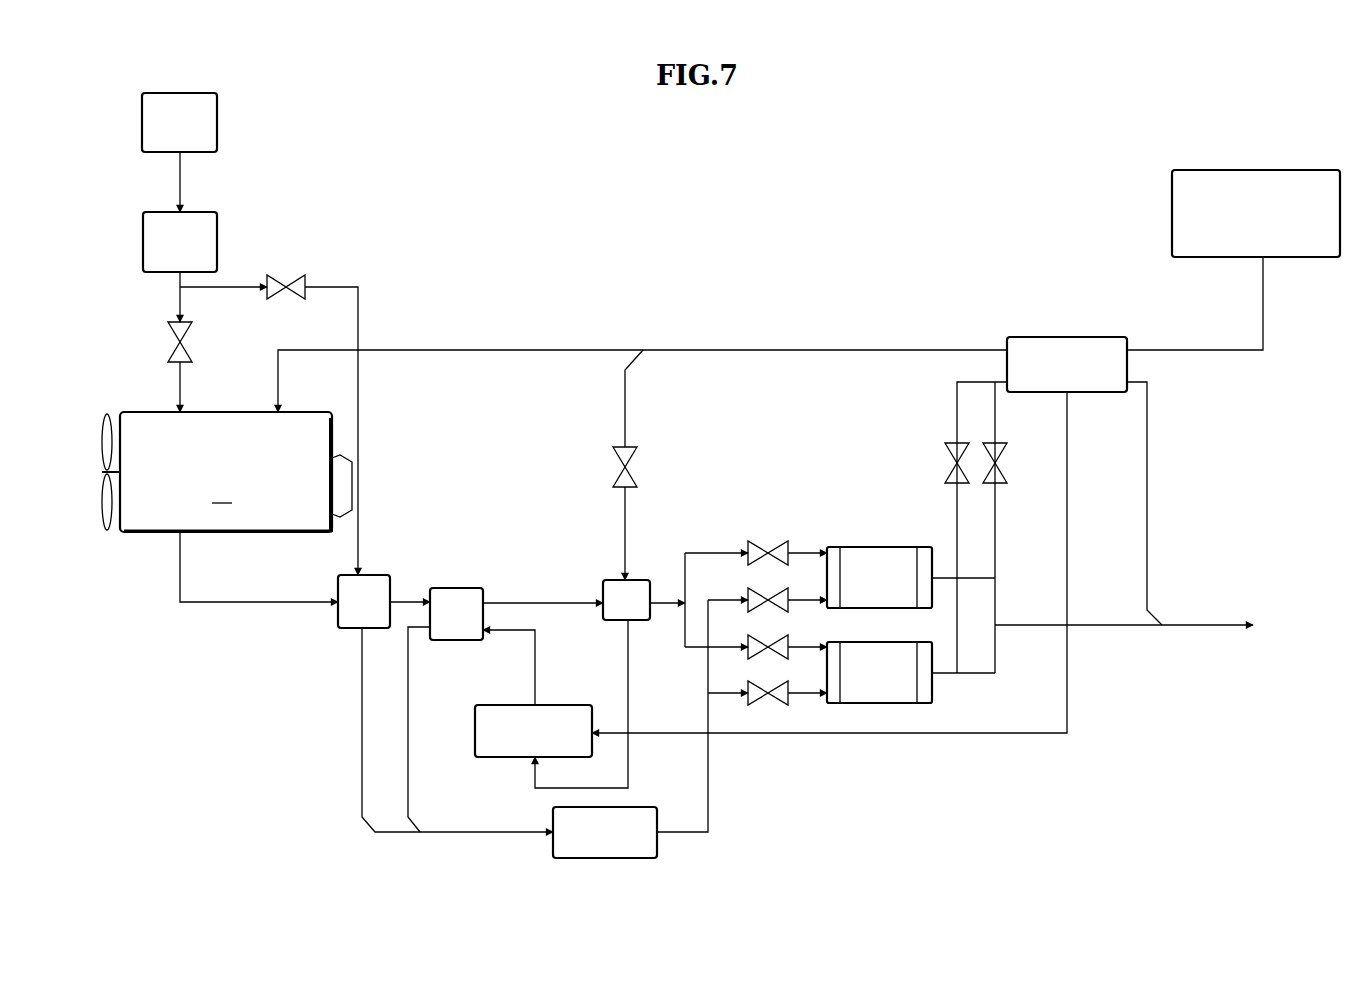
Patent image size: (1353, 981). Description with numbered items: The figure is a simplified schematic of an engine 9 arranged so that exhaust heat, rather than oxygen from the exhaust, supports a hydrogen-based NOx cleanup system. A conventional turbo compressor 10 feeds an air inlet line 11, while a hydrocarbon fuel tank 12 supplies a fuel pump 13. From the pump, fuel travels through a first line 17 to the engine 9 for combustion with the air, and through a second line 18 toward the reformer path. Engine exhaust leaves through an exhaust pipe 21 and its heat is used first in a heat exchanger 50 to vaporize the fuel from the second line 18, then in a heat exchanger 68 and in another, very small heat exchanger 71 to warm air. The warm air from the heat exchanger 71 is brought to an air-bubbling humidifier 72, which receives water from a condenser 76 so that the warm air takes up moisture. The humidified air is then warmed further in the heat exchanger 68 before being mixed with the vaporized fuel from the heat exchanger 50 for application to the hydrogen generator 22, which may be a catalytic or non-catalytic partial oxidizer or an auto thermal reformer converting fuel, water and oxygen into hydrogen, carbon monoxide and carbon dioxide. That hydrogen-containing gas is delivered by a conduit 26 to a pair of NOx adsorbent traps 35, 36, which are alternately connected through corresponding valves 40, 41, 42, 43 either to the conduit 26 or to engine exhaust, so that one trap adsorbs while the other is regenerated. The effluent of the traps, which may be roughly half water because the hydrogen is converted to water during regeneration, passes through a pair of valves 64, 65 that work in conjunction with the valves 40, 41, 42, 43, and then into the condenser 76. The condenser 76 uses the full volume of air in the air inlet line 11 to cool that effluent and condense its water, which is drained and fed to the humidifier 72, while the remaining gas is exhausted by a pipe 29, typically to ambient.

The engine 9 is at (227, 472).
The turbo compressor 10 is at (1258, 170).
The air inlet line 11 is at (1167, 350).
The hydrocarbon fuel tank 12 is at (178, 93).
The fuel pump 13 is at (163, 212).
The first line 17 is at (178, 376).
The second line 18 is at (357, 405).
The exhaust pipe 21 is at (220, 602).
The hydrogen generator 22 is at (553, 815).
The conduit 26 is at (708, 795).
The pipe 29 is at (1178, 625).
The NOx adsorbent trap 35 is at (872, 547).
The NOx adsorbent trap 36 is at (872, 642).
The valve 40 is at (778, 546).
The valve 41 is at (778, 593).
The valve 42 is at (778, 640).
The valve 43 is at (778, 686).
The heat exchanger 50 is at (349, 575).
The valve 64 is at (950, 463).
The valve 65 is at (1002, 463).
The heat exchanger 68 is at (444, 588).
The heat exchanger 71 is at (616, 580).
The air-bubbling humidifier 72 is at (492, 705).
The condenser 76 is at (1062, 337).